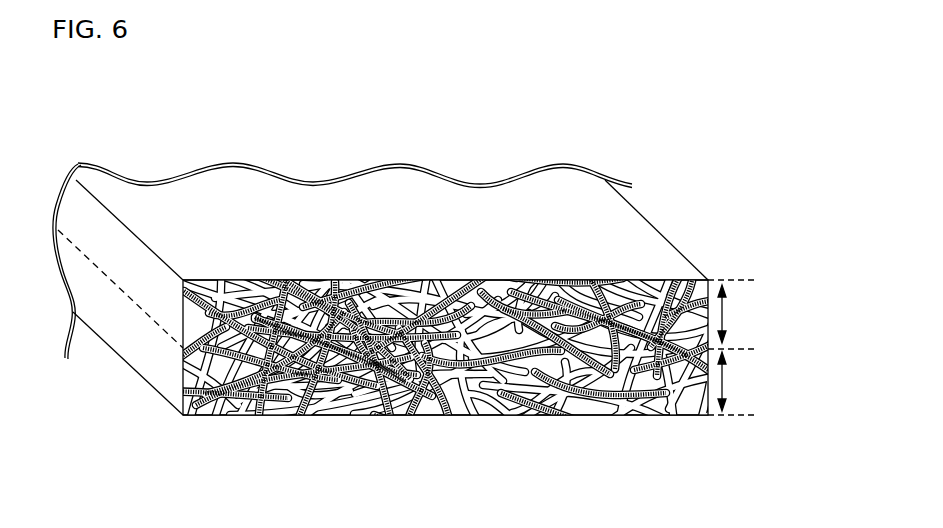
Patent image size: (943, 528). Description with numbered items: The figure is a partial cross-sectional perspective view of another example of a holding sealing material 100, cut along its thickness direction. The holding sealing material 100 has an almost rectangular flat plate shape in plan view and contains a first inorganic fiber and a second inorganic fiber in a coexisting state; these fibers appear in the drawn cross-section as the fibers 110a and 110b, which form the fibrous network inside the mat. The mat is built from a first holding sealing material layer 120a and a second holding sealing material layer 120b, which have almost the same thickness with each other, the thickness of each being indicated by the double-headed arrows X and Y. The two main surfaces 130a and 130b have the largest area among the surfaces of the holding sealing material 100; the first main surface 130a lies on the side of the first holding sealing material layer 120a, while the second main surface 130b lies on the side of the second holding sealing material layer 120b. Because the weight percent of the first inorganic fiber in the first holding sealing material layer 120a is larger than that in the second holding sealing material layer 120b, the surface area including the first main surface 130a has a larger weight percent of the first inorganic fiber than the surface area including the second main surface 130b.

The holding sealing material 100 is at (374, 120).
The first fibers 110a is at (362, 416).
The second fibers 110b is at (263, 416).
The first holding sealing material layer 120a is at (755, 282).
The second holding sealing material layer 120b is at (755, 350).
The first main surface 130a is at (602, 236).
The second main surface 130b is at (578, 416).